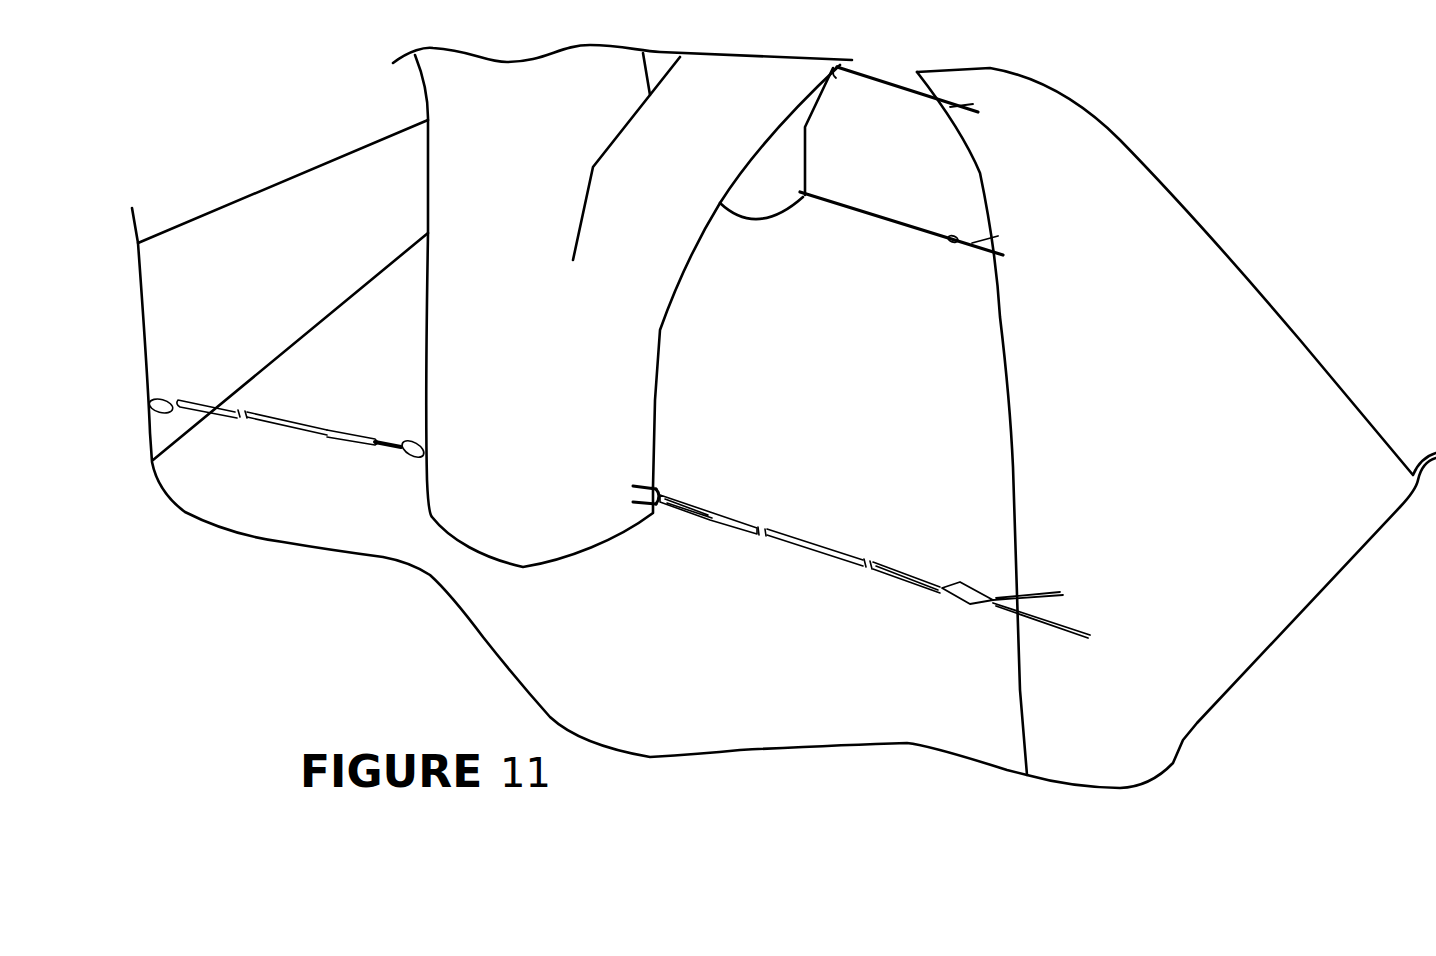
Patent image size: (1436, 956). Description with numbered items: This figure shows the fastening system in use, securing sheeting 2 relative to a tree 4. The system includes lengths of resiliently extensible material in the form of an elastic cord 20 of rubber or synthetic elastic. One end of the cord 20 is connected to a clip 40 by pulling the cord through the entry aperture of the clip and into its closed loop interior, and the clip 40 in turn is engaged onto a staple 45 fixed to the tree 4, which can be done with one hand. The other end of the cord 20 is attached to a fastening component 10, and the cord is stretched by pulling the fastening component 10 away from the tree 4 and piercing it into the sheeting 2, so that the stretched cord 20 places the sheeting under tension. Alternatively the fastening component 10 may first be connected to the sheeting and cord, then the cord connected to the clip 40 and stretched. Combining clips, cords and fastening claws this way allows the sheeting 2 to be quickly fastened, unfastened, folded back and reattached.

The sheeting 2 is at (1170, 257).
The tree 4 is at (670, 270).
The fastening component 10 is at (940, 122).
The cord 20 is at (810, 540).
The clip 40 is at (698, 507).
The staple 45 is at (655, 487).